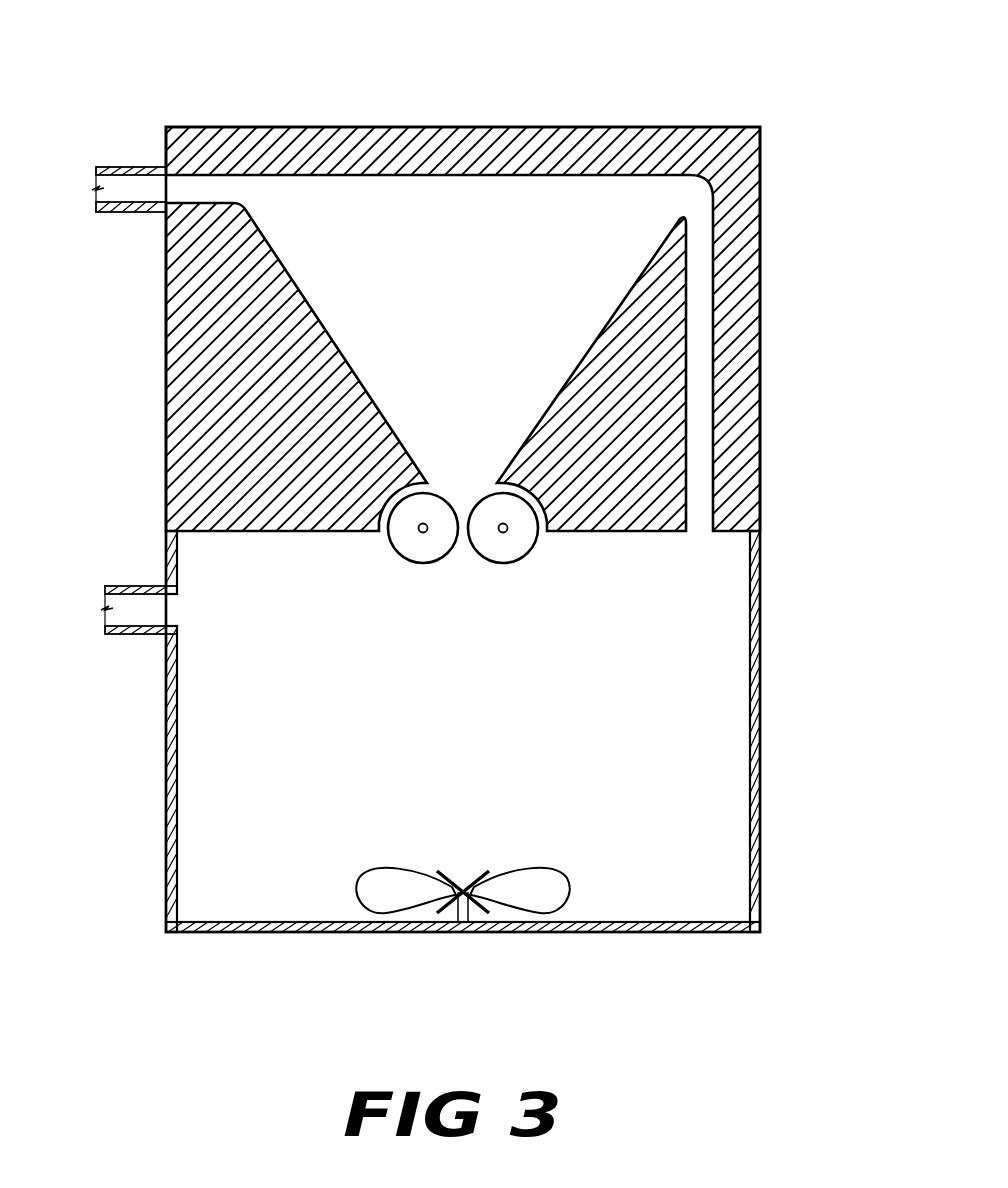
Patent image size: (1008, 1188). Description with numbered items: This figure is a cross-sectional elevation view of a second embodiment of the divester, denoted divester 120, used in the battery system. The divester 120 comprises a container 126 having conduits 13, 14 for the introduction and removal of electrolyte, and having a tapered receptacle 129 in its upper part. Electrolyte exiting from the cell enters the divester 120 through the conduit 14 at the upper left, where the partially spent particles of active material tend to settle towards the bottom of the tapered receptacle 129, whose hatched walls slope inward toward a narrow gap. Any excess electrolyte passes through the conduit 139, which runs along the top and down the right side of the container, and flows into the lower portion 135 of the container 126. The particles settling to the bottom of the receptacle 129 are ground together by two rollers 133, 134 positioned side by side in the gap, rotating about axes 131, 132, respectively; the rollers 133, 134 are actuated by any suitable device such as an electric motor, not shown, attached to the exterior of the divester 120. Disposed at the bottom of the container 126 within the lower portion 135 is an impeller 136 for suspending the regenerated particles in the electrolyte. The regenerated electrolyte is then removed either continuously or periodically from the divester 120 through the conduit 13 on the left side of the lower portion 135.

The divester 120 is at (604, 105).
The conduit 139 is at (722, 318).
The conduit 14 is at (105, 167).
The tapered receptacle 129 is at (394, 270).
The axis 131 is at (424, 523).
The axis 132 is at (503, 523).
The roller 133 is at (420, 545).
The roller 134 is at (508, 545).
The container 126 is at (760, 716).
The conduit 13 is at (116, 586).
The lower portion 135 is at (256, 768).
The impeller 136 is at (518, 882).